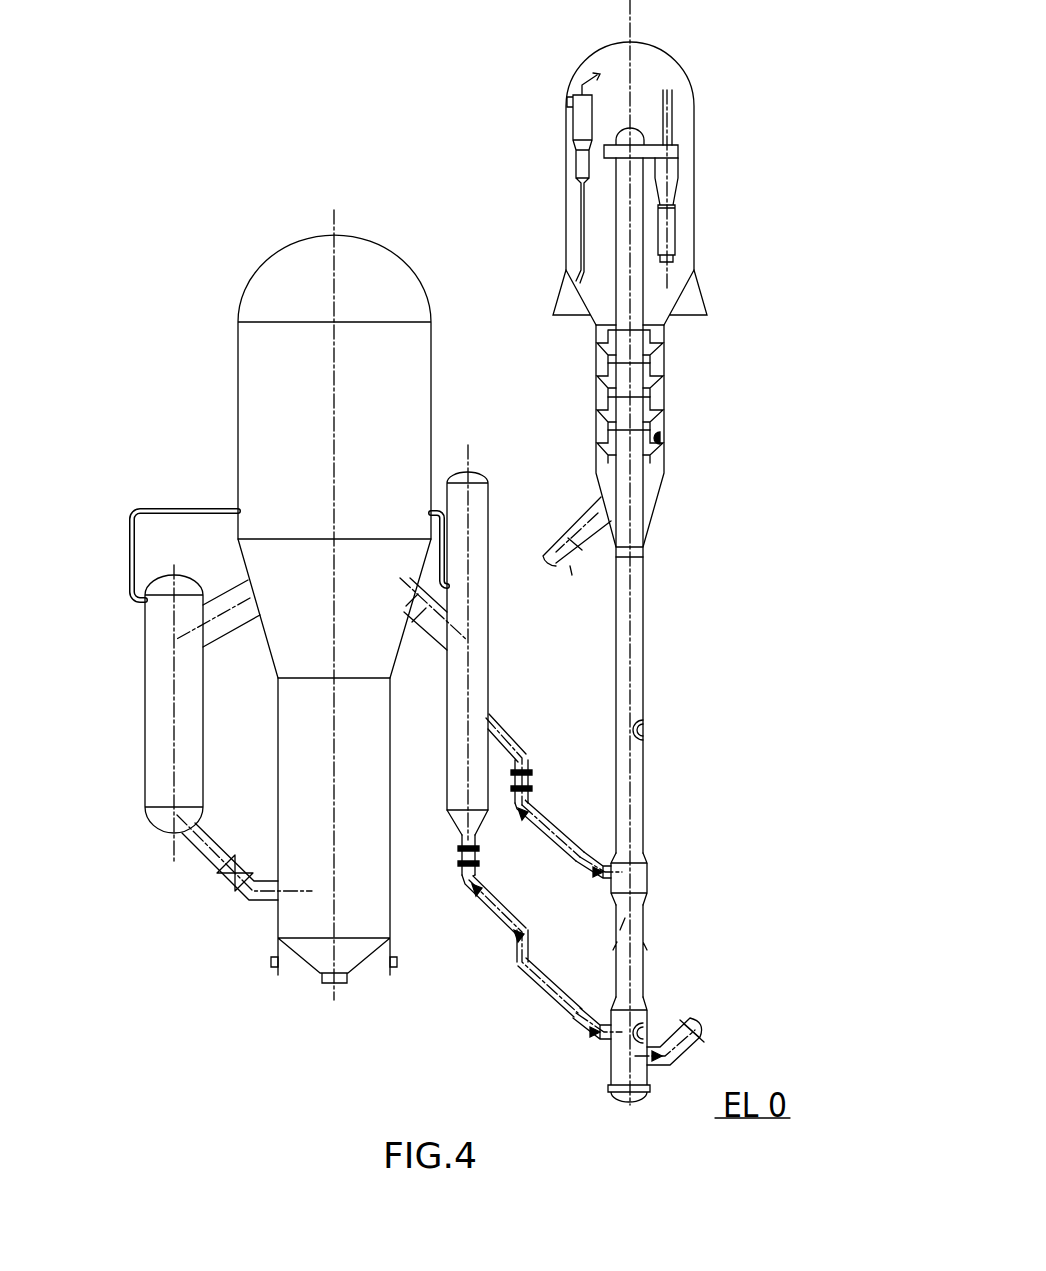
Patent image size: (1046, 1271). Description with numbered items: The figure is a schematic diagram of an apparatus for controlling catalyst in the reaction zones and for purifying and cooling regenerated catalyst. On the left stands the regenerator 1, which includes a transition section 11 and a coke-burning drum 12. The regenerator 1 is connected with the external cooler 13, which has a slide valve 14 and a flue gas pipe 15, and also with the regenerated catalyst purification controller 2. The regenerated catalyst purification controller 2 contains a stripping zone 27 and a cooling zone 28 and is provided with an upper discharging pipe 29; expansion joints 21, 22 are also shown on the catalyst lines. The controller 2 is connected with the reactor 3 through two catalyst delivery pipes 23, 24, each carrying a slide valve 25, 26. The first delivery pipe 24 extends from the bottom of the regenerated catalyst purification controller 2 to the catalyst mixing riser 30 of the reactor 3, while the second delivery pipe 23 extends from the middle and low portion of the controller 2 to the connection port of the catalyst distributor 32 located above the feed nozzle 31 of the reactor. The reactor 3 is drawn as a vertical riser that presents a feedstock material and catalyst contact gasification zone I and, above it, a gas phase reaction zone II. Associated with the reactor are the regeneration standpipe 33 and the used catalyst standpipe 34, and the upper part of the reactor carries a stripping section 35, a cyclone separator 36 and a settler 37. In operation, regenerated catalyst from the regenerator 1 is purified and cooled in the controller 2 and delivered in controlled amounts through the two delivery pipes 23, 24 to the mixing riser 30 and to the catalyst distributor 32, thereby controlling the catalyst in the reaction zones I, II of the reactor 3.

The regenerator 1 is at (252, 378).
The transition section of regenerator 11 is at (298, 635).
The coke-burning drum of regenerator 12 is at (305, 775).
The external cooler 13 is at (158, 718).
The slide valve of external cooler 14 is at (230, 875).
The flue gas pipe of external cooler 15 is at (132, 522).
The regenerated catalyst purification controller 2 is at (480, 497).
The expansion joint 21 is at (588, 747).
The expansion joint 22 is at (525, 875).
The catalyst delivery pipe of regenerated catalyst purification controller 23 is at (597, 783).
The catalyst delivery pipe of regenerated catalyst purification controller 24 is at (515, 915).
The slide valve in catalyst delivery pipe of regenerated catalyst purification contr 25 is at (610, 825).
The slide valve in catalyst delivery pipe of regenerated catalyst purification contr 26 is at (578, 1015).
The stripping zone of regenerated catalyst purification controller 27 is at (457, 777).
The cooling zone of regenerated catalyst purification controller 28 is at (478, 617).
The upper discharging pipe of regenerated catalyst purification controller 29 is at (440, 565).
The reactor 3 is at (630, 698).
The catalyst mixing riser 30 is at (707, 990).
The feed nozzle 31 is at (713, 937).
The catalyst distributor 32 is at (648, 868).
The regeneration standpipe 33 is at (695, 1032).
The used catalyst standpipe 34 is at (585, 525).
The stripping section 35 is at (650, 420).
The cyclone separator 36 is at (677, 175).
The settler 37 is at (693, 95).
The feedstock material and catalyst contact gasification zone of reactor I is at (637, 927).
The gas phase reaction zone of reactor II is at (643, 742).